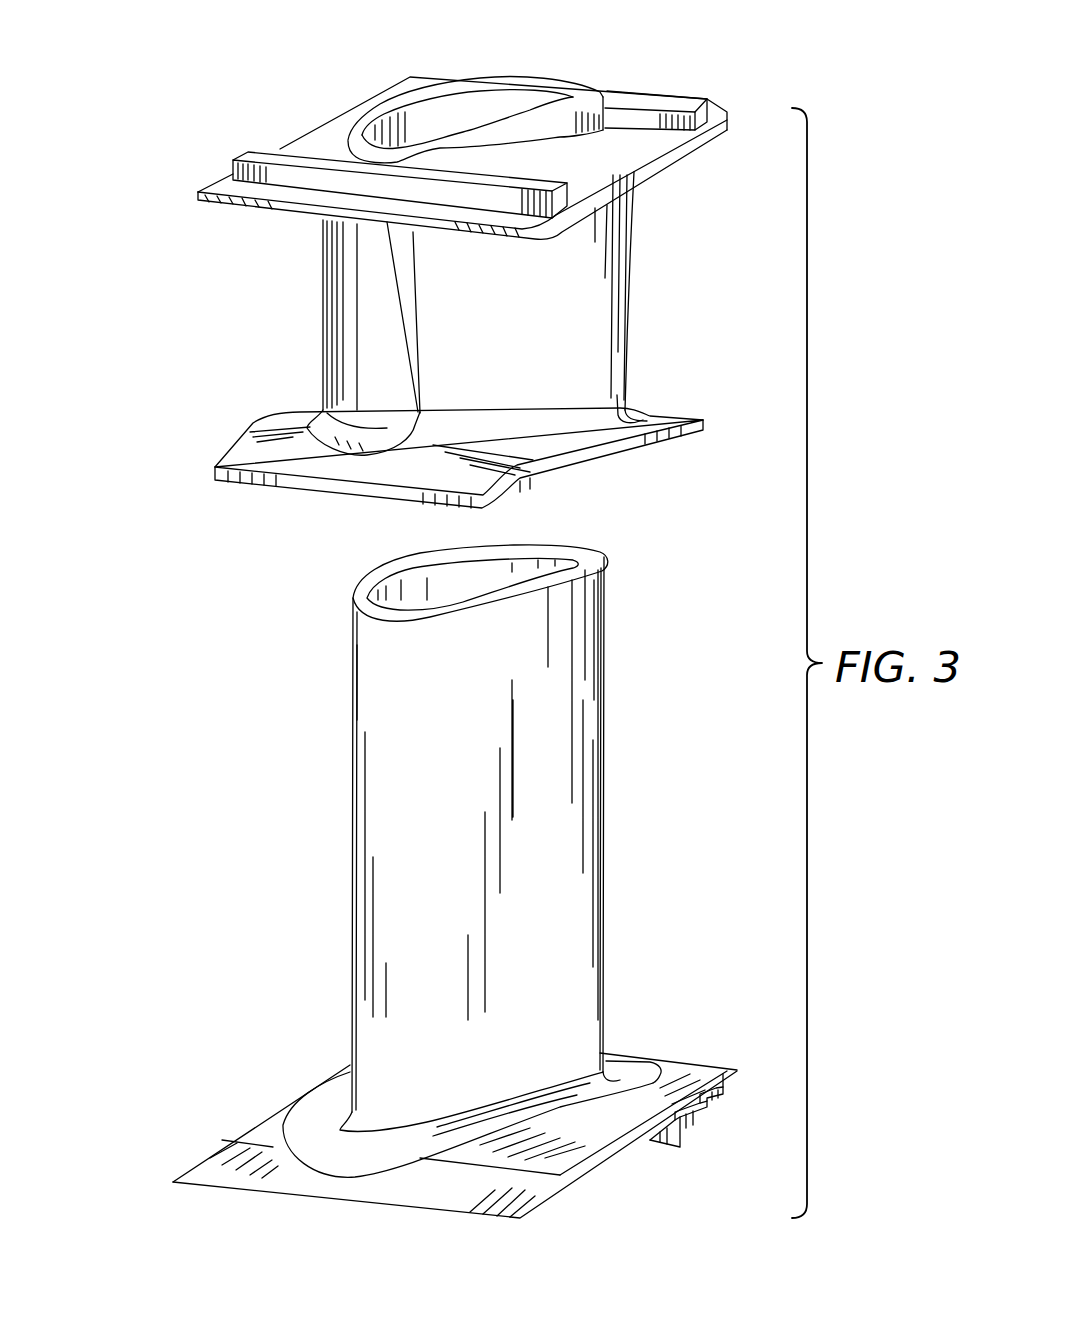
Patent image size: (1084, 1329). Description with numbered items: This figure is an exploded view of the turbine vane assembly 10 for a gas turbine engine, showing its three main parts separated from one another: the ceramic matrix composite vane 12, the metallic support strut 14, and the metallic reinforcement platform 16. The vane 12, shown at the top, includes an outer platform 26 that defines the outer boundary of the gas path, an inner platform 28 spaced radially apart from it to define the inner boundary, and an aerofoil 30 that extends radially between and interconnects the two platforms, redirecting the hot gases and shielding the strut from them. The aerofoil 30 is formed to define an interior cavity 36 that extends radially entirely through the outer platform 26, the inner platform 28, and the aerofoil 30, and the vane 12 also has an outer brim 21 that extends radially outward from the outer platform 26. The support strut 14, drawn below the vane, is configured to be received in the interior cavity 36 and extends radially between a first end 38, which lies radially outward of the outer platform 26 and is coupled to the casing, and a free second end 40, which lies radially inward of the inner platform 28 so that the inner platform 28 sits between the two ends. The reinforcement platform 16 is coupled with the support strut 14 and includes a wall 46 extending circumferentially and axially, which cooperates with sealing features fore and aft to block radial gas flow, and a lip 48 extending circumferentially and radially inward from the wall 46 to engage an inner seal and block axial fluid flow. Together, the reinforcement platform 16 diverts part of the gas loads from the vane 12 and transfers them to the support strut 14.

The turbine vane assembly 10 is at (141, 119).
The ceramic matrix composite vane 12 is at (634, 322).
The metallic support strut 14 is at (352, 728).
The metallic reinforcement platform 16 is at (248, 1152).
The outer brim 21 is at (586, 112).
The outer platform 26 is at (327, 150).
The inner platform 28 is at (252, 459).
The aerofoil 30 is at (321, 315).
The interior cavity 36 is at (451, 113).
The first end 38 is at (616, 570).
The second end 40 is at (336, 1116).
The wall 46 is at (628, 1108).
The lip 48 is at (709, 1123).